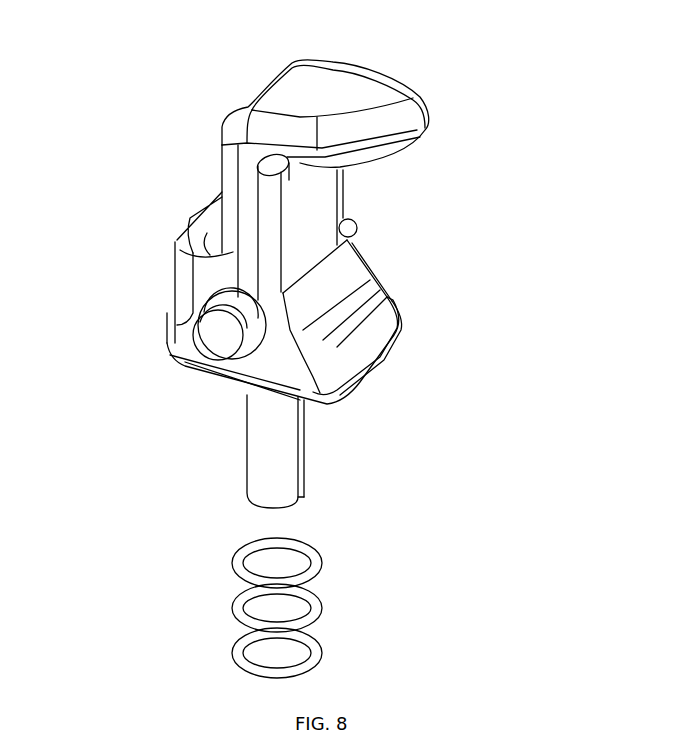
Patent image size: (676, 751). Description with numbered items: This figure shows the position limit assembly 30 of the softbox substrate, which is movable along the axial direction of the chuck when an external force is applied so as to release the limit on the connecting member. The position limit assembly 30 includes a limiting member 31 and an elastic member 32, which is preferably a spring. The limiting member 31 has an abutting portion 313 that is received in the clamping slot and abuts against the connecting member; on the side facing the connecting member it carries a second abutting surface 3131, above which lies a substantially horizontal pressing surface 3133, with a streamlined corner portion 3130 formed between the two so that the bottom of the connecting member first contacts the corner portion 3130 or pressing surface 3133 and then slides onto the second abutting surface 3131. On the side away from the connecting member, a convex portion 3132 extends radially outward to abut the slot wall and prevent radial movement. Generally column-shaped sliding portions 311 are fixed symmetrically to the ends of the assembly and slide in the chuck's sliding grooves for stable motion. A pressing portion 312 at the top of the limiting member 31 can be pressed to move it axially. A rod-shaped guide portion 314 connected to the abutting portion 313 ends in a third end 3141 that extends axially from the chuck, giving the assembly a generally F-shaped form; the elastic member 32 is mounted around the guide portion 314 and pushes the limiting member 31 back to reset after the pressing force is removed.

The position limit assembly 30 is at (354, 40).
The limiting member 31 is at (500, 472).
The pressing portion 312 is at (372, 102).
The convex portion 3132 is at (178, 233).
The sliding portion 311 is at (212, 333).
The abutting portion 313 is at (267, 360).
The corner portion 3130 is at (367, 297).
The pressing surface 3133 is at (373, 282).
The second abutting surface 3131 is at (358, 348).
The guide portion 314 is at (270, 430).
The third end 3141 is at (296, 495).
The elastic member 32 is at (318, 636).